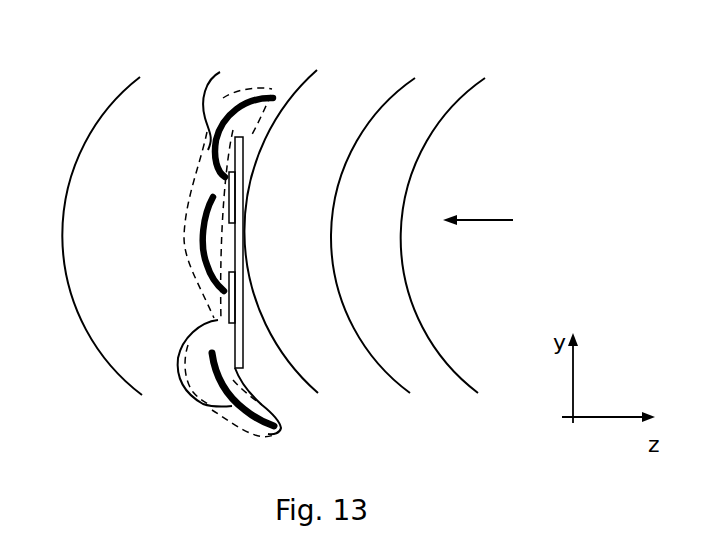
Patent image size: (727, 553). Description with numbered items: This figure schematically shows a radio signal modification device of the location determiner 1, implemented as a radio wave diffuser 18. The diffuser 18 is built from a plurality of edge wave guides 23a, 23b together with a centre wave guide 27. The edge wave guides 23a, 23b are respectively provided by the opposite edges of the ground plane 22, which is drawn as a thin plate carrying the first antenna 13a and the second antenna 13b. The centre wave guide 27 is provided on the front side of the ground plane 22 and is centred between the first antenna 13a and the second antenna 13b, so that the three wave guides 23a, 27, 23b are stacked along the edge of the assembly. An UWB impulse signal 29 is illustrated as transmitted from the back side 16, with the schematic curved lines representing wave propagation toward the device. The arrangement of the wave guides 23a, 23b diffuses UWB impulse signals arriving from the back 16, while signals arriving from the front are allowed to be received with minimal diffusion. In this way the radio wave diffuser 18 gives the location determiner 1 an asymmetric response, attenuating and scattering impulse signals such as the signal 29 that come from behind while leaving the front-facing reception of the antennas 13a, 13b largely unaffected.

The location determiner 1 is at (477, 43).
The first antenna 13a is at (228, 213).
The second antenna 13b is at (230, 302).
The back side 16 is at (646, 253).
The radio wave diffuser 18 is at (242, 88).
The ground plane 22 is at (245, 238).
The edge wave guide 23a is at (218, 130).
The edge wave guide 23b is at (207, 405).
The centre wave guide 27 is at (204, 257).
The UWB impulse signal 29 is at (494, 224).